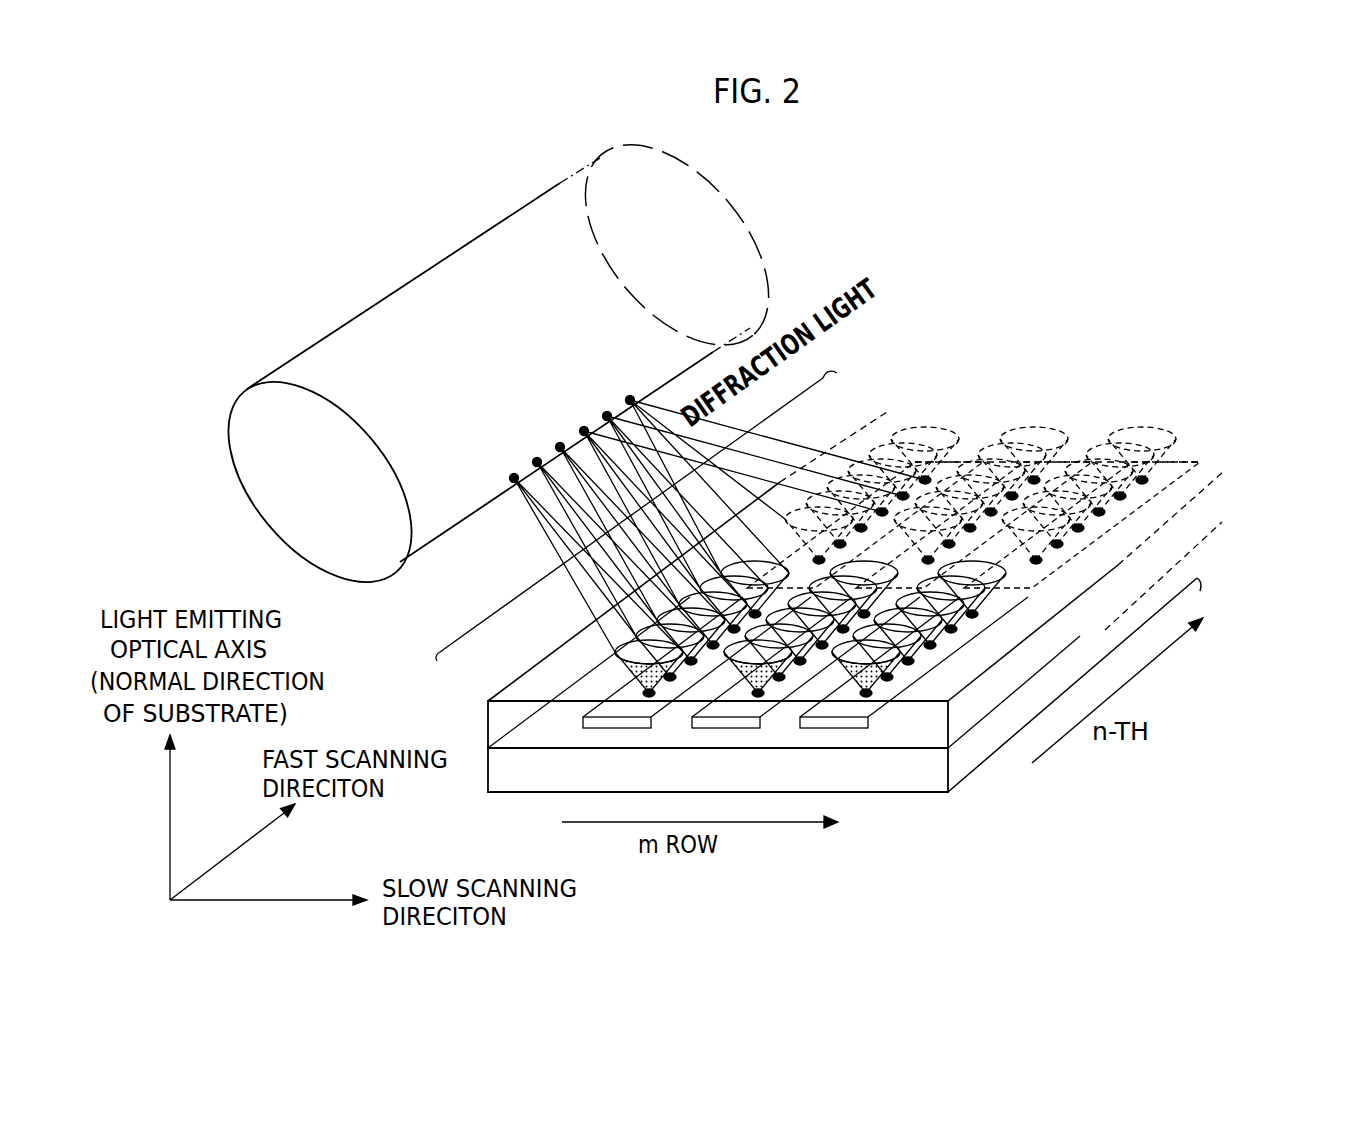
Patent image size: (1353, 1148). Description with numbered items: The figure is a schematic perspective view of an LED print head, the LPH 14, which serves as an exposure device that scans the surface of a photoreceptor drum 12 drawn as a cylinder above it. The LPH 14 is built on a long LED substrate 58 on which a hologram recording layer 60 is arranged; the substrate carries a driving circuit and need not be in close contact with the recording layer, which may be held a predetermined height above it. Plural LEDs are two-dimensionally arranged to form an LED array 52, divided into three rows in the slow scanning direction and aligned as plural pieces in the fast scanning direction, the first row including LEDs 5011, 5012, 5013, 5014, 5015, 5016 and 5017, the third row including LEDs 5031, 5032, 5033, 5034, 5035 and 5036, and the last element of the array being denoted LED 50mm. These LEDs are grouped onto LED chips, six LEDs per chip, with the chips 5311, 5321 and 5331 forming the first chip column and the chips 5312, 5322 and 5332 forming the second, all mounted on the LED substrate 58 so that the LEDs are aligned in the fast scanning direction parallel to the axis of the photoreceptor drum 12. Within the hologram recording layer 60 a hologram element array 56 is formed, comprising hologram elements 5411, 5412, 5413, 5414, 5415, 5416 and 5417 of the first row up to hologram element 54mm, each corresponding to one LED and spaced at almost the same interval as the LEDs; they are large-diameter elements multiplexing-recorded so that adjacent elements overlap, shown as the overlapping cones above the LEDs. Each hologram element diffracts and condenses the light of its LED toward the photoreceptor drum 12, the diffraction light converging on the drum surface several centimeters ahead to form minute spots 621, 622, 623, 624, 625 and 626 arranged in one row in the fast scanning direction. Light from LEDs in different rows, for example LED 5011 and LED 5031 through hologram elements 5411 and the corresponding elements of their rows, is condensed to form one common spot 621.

The photoreceptor drum 12 is at (319, 357).
The LPH 14 is at (1238, 414).
The LED array 52 is at (1090, 684).
The hologram element array 56 is at (519, 594).
The LED substrate 58 is at (940, 777).
The hologram recording layer 60 is at (940, 727).
The spot 621 is at (514, 478).
The spot 622 is at (537, 462).
The spot 623 is at (560, 447).
The spot 624 is at (584, 431).
The spot 625 is at (607, 416).
The spot 626 is at (630, 400).
The hologram element 5411 is at (612, 650).
The hologram element 5412 is at (633, 633).
The hologram element 5413 is at (654, 617).
The hologram element 5414 is at (677, 600).
The hologram element 5415 is at (700, 584).
The hologram element 5416 is at (722, 568).
The hologram element 5417 is at (785, 515).
The hologram element 54mm is at (1176, 441).
The LED 5011 is at (652, 697).
The LED 5012 is at (672, 680).
The LED 5013 is at (693, 664).
The LED 5014 is at (715, 648).
The LED 5015 is at (736, 632).
The LED 5016 is at (758, 616).
The LED 5017 is at (823, 560).
The LED 5031 is at (870, 691).
The LED 5032 is at (891, 675).
The LED 5033 is at (912, 659).
The LED 5034 is at (934, 643).
The LED 5035 is at (955, 627).
The LED 5036 is at (976, 612).
The LED 50mm is at (1146, 482).
The LED chip 5311 is at (623, 716).
The LED chip 5321 is at (733, 716).
The LED chip 5331 is at (844, 716).
The LED chip 5312 is at (946, 411).
The LED chip 5322 is at (1054, 414).
The LED chip 5332 is at (1167, 414).